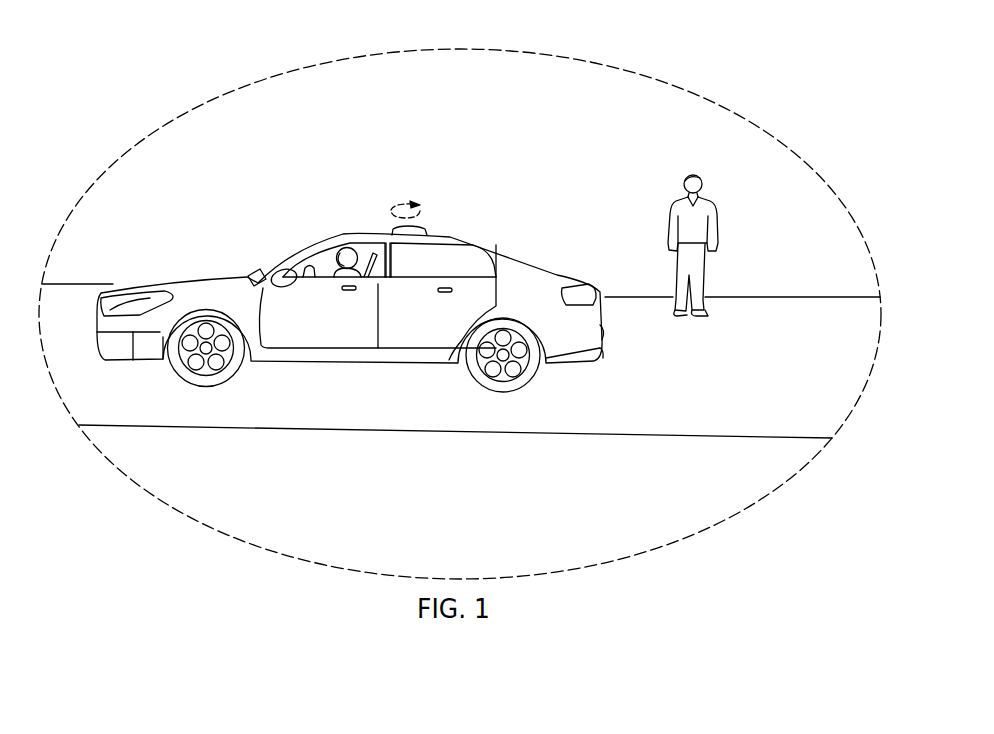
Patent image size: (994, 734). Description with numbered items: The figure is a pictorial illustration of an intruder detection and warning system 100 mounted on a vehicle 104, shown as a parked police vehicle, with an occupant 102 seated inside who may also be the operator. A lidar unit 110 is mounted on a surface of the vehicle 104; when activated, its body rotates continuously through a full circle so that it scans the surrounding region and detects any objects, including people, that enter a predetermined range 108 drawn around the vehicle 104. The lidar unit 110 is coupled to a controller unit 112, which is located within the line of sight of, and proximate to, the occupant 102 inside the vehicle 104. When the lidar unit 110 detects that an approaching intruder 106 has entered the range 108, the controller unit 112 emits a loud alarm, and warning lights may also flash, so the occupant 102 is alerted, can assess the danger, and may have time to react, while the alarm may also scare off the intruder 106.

The intruder detection and warning system 100 is at (206, 51).
The occupant 102 is at (350, 245).
The vehicle 104 is at (492, 247).
The intruder 106 is at (733, 201).
The range 108 is at (636, 73).
The lidar unit 110 is at (424, 230).
The controller unit 112 is at (249, 270).